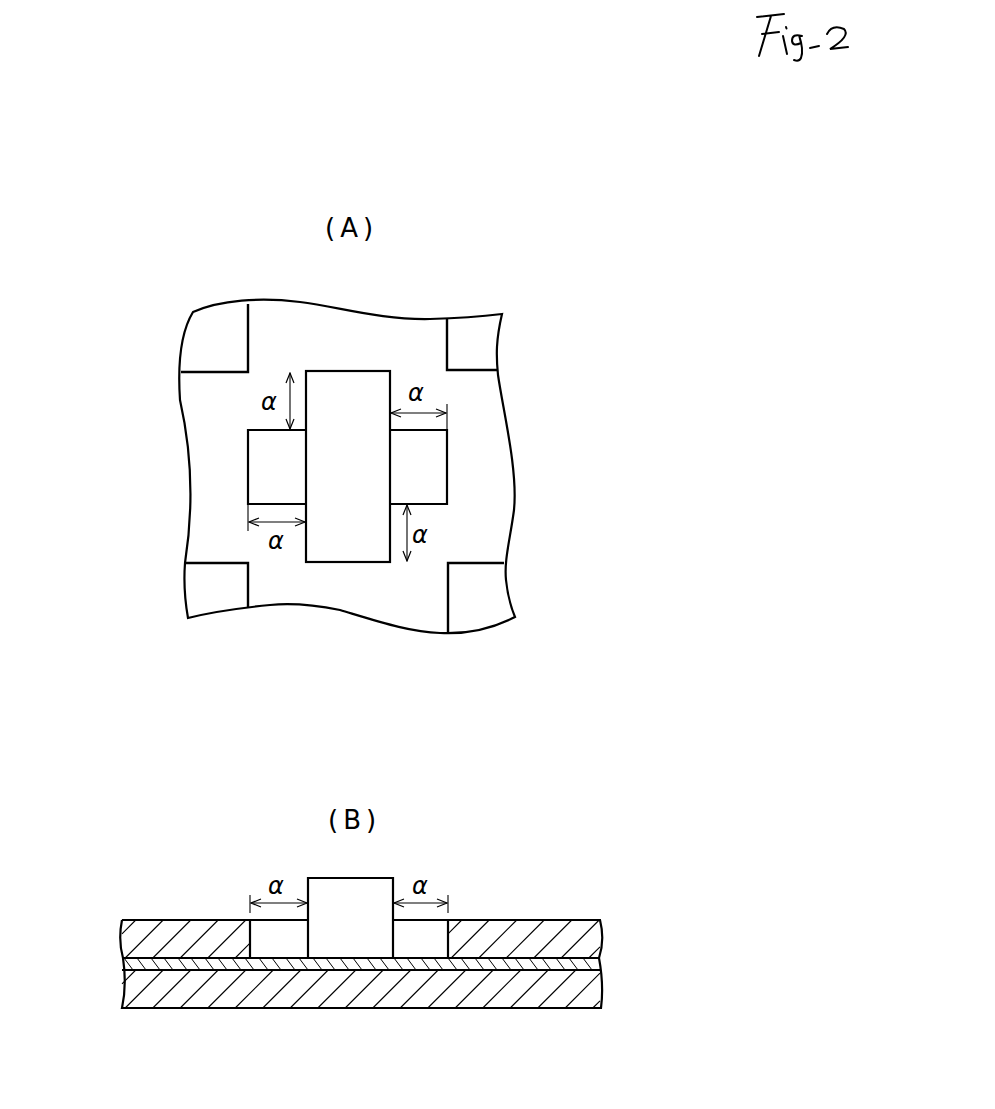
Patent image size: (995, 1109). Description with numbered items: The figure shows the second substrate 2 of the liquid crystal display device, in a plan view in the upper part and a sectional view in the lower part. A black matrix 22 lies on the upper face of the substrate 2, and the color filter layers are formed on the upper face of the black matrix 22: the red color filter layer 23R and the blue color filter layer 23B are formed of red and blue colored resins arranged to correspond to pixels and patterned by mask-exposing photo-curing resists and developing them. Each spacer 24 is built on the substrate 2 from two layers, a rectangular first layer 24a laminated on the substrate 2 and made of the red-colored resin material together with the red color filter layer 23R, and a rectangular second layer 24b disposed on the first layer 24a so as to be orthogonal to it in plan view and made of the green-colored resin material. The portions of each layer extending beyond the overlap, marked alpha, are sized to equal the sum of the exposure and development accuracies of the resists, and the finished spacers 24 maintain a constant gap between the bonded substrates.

The second substrate 2 is at (403, 620).
The black matrix 22 is at (603, 960).
The blue color filter layer 23B is at (220, 338).
The red color filter layer 23R is at (485, 589).
The spacer 24 is at (232, 480).
The first layer 24a is at (425, 468).
The second layer 24b is at (353, 396).